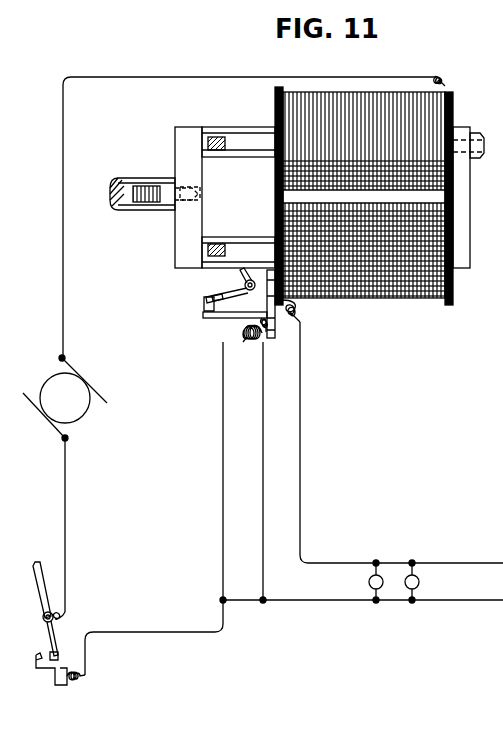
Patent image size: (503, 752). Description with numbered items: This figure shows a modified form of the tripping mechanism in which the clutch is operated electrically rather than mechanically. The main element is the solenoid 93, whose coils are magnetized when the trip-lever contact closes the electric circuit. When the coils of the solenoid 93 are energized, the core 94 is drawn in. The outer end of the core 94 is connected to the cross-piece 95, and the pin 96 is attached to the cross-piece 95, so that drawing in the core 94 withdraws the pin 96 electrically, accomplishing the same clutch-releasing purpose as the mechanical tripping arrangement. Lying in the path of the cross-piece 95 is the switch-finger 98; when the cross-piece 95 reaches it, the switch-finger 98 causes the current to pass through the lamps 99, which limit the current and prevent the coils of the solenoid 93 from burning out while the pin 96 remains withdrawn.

The solenoid 93 is at (368, 100).
The core 94 is at (230, 133).
The cross-piece 95 is at (188, 130).
The pin 96 is at (127, 183).
The switch-finger 98 is at (238, 277).
The lamp 99 is at (380, 578).